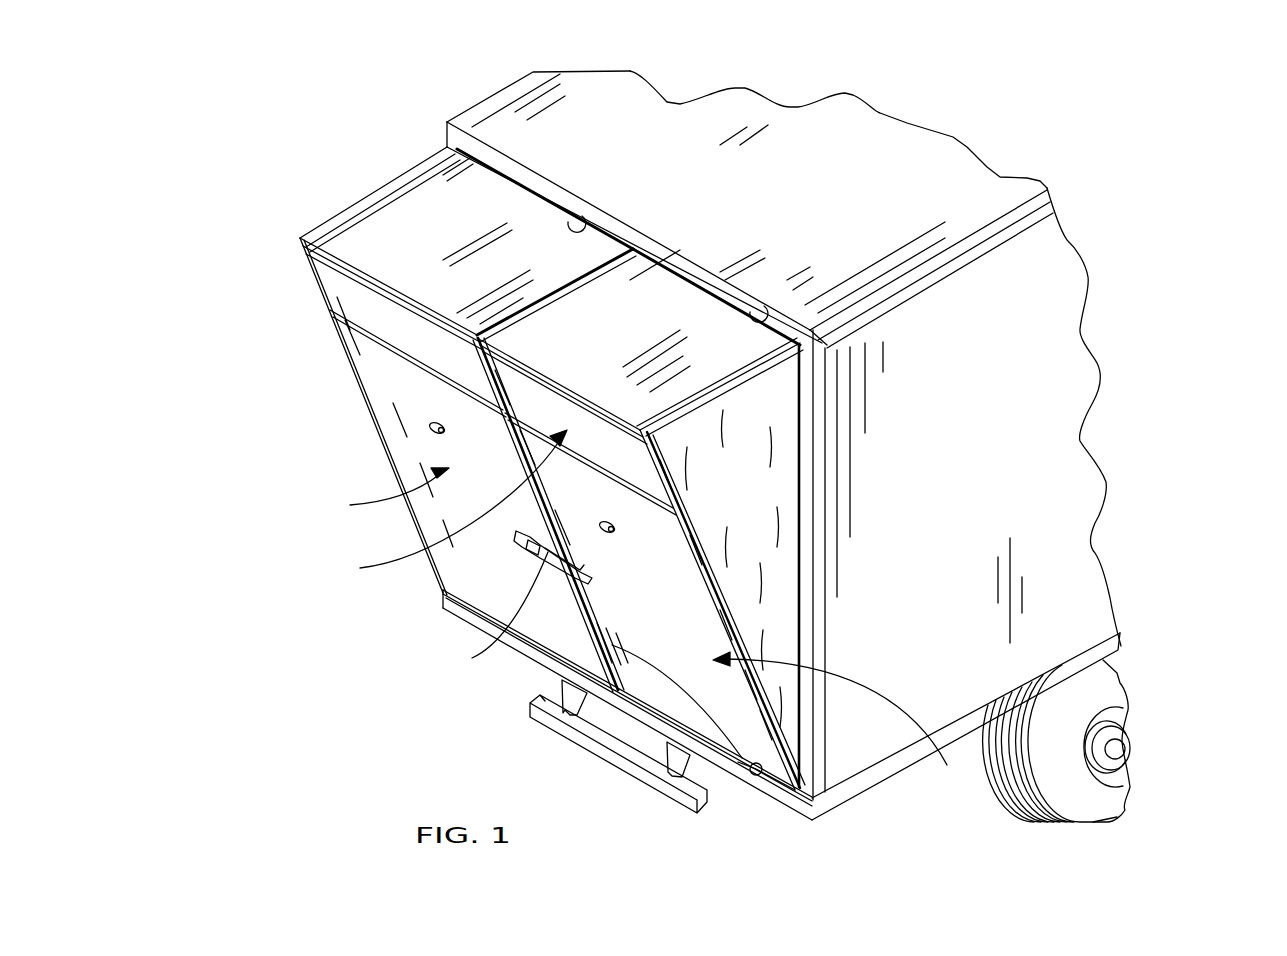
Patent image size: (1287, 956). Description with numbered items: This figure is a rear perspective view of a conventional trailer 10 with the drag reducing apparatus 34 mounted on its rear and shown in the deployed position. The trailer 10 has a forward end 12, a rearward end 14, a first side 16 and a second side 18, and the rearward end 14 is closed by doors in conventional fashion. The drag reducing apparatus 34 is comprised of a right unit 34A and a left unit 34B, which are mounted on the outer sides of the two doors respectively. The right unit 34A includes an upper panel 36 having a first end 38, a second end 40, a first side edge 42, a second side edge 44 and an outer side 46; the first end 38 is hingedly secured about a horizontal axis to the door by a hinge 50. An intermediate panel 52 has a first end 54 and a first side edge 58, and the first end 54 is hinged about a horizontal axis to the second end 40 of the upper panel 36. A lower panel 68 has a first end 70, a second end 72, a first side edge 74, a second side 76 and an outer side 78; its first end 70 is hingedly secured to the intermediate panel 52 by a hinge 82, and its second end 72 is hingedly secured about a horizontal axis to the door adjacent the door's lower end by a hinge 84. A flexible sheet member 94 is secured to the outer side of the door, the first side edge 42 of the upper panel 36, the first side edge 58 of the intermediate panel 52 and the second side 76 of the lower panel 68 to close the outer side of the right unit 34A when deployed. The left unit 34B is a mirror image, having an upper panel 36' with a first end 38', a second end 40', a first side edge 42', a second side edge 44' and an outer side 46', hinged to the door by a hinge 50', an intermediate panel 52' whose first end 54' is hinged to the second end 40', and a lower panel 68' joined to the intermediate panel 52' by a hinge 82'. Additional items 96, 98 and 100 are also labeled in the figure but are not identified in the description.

The trailer 10 is at (930, 166).
The forward end 12 is at (1140, 138).
The rearward end 14 is at (308, 407).
The first side 16 is at (1158, 358).
The second side 18 is at (418, 123).
The right unit 34A is at (683, 624).
The left unit 34B is at (390, 458).
The drag reducing apparatus 34 is at (446, 506).
The upper panel 36 is at (640, 314).
The upper panel 36' is at (470, 230).
The first end 38 is at (800, 273).
The first end 38' is at (610, 189).
The second end 40 is at (565, 386).
The second end 40' is at (394, 291).
The first side edge 42 is at (731, 321).
The first side edge 42' is at (432, 196).
The second side edge 44 is at (631, 291).
The second side edge 44' is at (556, 284).
The outer side 46 is at (655, 336).
The outer side 46' is at (477, 223).
The hinge 50 is at (716, 258).
The hinge 50' is at (537, 151).
The intermediate panel 52 is at (482, 517).
The intermediate panel 52' is at (337, 408).
The first end 54 is at (650, 380).
The first end 54' is at (485, 292).
The first side edge 58 is at (760, 410).
The lower panel 68 is at (786, 718).
The lower panel 68' is at (381, 491).
The first end 70 is at (644, 495).
The second end 72 is at (757, 775).
The first side edge 74 is at (738, 764).
The second side 76 is at (710, 590).
The outer side 78 is at (604, 582).
The hinge 82 is at (590, 464).
The hinge 82' is at (366, 363).
The hinge 84 is at (440, 597).
The flexible sheet member 94 is at (757, 481).
The handle 96 is at (515, 604).
The latch 98 is at (613, 531).
The latch 100 is at (437, 424).